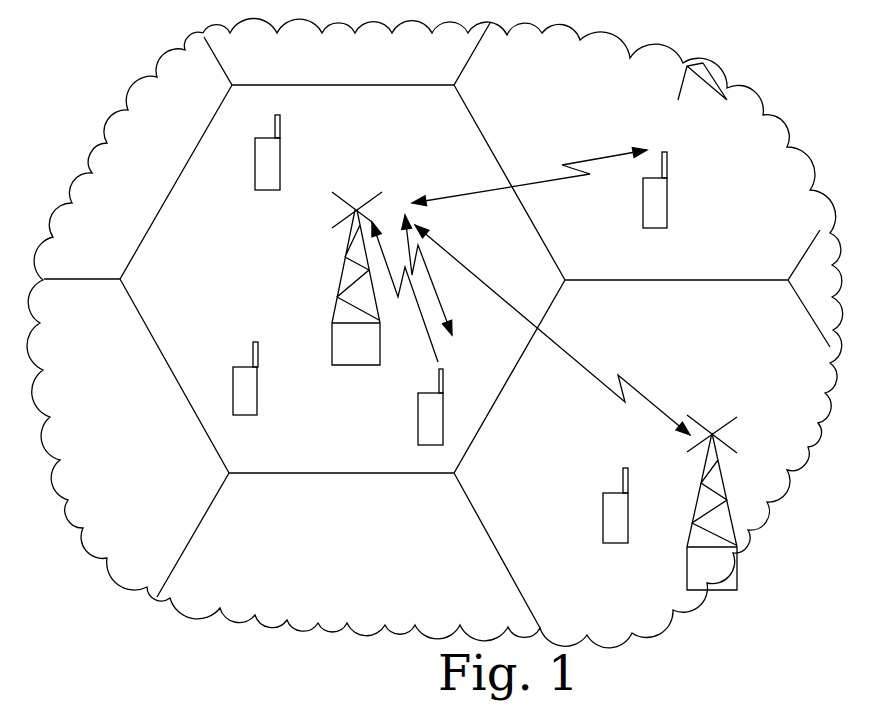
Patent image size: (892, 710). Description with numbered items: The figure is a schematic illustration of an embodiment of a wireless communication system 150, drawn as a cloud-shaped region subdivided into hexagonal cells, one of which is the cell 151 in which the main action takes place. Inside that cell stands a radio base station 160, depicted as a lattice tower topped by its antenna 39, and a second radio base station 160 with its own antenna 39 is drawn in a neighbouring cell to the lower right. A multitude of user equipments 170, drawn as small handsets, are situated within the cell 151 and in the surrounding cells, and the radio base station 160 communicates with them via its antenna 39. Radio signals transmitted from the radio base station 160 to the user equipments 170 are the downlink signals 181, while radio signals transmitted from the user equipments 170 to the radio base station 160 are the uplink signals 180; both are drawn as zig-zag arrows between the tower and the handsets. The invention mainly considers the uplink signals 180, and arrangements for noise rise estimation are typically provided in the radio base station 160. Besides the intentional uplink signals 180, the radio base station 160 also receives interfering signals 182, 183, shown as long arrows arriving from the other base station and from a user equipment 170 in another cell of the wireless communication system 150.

The antenna 39 is at (355, 205).
The wireless communication system 150 is at (343, 622).
The cell 151 is at (155, 302).
The radio base station 160 is at (340, 342).
The user equipment 170 is at (265, 173).
The uplink signal 180 is at (427, 327).
The downlink signal 181 is at (440, 297).
The interfering signal 182 is at (583, 373).
The interfering signal 183 is at (583, 157).